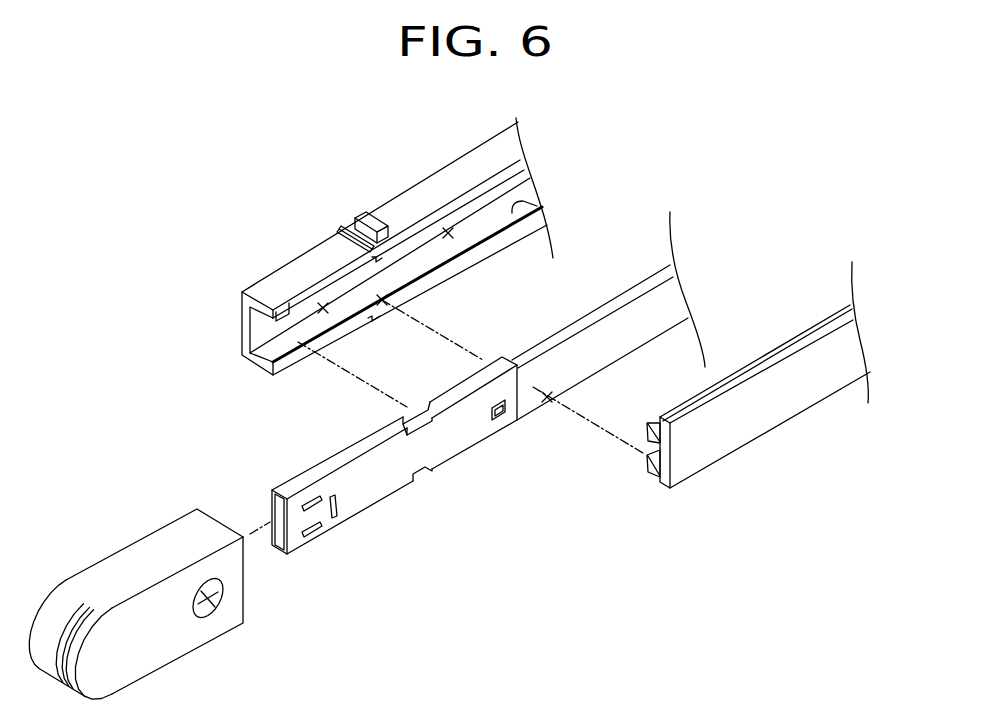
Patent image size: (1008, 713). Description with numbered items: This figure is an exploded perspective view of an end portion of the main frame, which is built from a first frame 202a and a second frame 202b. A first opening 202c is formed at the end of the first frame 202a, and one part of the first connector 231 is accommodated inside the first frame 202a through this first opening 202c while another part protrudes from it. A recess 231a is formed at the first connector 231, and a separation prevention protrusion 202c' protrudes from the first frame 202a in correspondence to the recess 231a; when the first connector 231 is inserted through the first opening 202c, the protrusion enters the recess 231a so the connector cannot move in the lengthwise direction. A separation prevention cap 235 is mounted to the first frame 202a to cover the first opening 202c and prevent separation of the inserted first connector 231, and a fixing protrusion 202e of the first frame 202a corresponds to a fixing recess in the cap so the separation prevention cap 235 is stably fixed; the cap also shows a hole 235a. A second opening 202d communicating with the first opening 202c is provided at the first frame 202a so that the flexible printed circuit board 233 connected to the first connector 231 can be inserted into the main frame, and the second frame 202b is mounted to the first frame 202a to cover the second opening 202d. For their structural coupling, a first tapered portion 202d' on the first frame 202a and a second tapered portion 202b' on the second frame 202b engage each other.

The first frame 202a is at (486, 162).
The second frame 202b is at (765, 385).
The second tapered portion 202b' is at (627, 476).
The first opening 202c is at (326, 248).
The separation prevention protrusion 202c' is at (219, 332).
The second opening 202d is at (409, 180).
The first tapered portion 202d' is at (567, 195).
The fixing protrusion 202e is at (349, 228).
The first connector 231 is at (358, 507).
The recess 231a is at (423, 472).
The flexible printed circuit board 233 is at (632, 318).
The separation prevention cap 235 is at (162, 652).
The hole of cap 235a is at (217, 603).